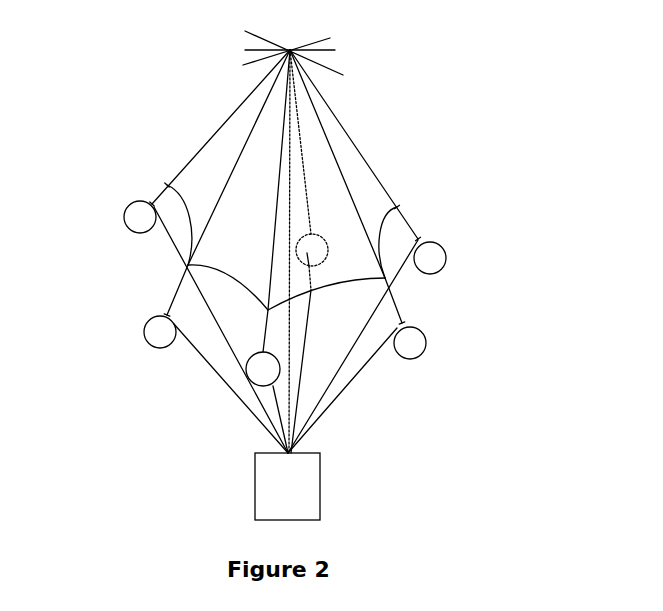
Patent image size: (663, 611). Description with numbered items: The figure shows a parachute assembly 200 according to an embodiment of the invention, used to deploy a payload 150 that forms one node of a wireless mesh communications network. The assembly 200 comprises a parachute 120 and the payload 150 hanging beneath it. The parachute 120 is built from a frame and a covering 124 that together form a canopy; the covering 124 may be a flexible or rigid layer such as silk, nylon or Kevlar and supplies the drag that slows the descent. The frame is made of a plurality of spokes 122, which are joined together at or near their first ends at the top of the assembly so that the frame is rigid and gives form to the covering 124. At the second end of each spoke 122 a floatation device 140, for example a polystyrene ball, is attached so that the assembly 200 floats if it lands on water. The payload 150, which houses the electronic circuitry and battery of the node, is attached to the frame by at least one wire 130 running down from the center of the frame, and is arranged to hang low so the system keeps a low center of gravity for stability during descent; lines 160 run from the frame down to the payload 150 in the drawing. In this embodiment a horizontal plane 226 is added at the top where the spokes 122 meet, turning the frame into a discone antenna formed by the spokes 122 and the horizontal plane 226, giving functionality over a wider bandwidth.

The parachute assembly 200 is at (298, 274).
The horizontal plane on the top 226 is at (271, 52).
The spokes 122 is at (344, 138).
The wire 130 is at (273, 205).
The parachute 120 is at (277, 227).
The covering 124 is at (185, 174).
The floatation device 140 is at (296, 293).
The tethers 160 is at (286, 330).
The payload 150 is at (287, 486).